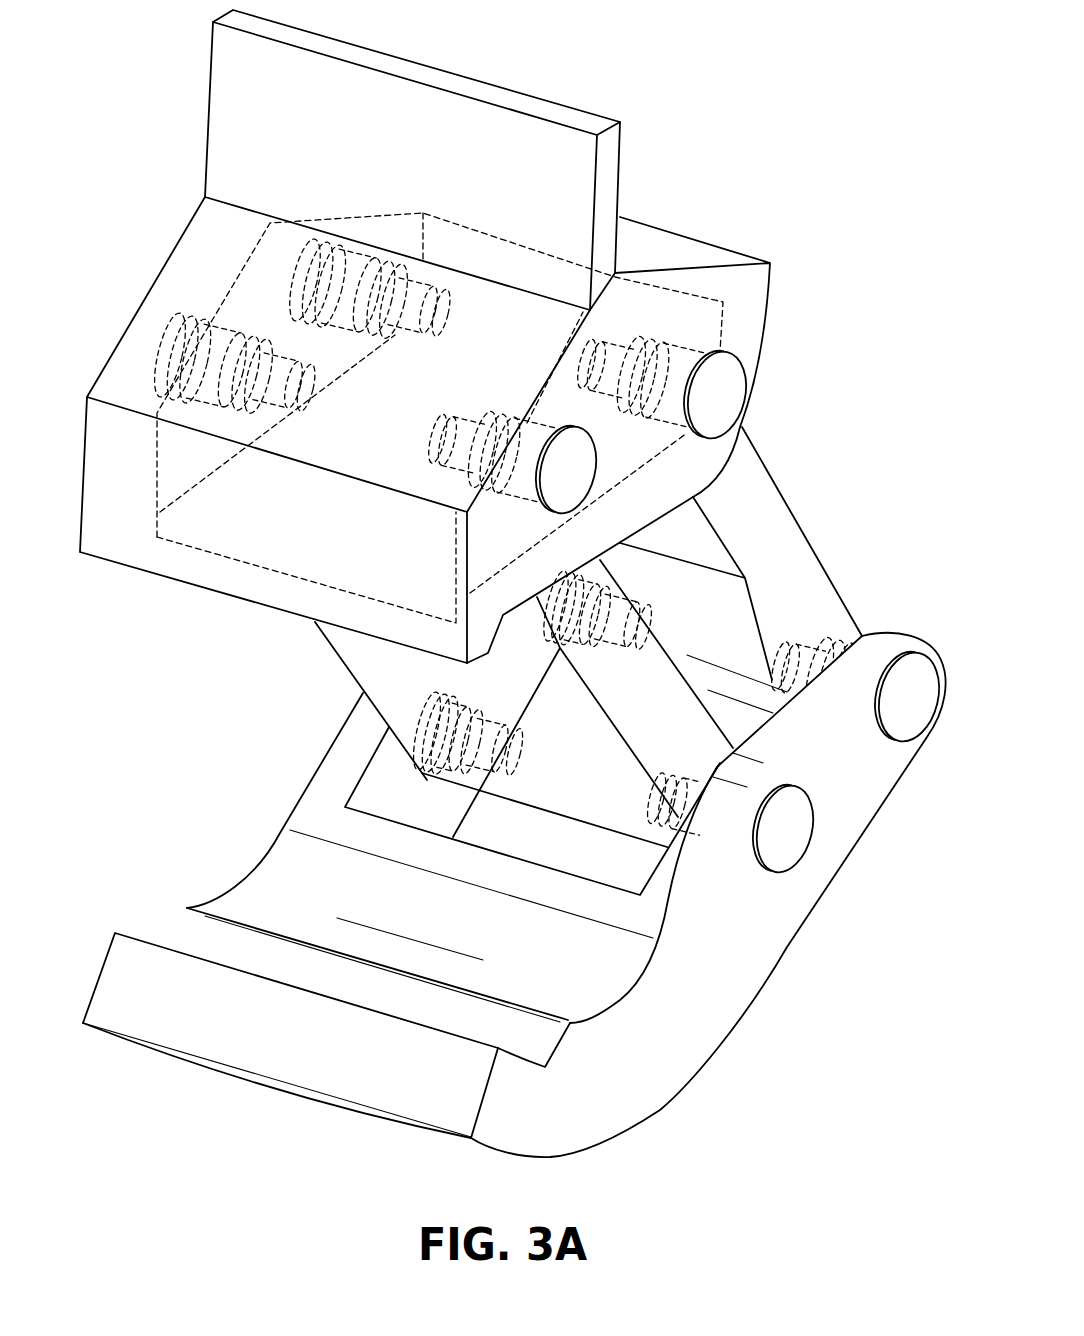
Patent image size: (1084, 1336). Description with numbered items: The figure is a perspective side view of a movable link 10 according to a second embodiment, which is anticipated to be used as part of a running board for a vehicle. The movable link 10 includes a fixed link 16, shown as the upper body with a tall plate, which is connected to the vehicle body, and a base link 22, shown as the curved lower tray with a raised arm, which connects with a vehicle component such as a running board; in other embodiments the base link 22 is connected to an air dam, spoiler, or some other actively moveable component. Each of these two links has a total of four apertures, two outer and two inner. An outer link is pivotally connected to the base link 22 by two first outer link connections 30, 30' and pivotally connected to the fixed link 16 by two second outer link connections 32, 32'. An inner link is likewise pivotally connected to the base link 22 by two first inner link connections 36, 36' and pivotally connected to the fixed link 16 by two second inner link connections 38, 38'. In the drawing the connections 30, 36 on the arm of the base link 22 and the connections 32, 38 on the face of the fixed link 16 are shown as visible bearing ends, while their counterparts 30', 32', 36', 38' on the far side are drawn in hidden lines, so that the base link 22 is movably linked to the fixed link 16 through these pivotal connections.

The movable link 10 is at (800, 130).
The fixed link 16 is at (755, 291).
The base link 22 is at (693, 1008).
The first outer link connection 30 is at (790, 835).
The first outer link connection 30' is at (375, 724).
The second outer link connection 32 is at (577, 477).
The second outer link connection 32' is at (184, 349).
The first inner link connection 36 is at (913, 687).
The first inner link connection 36' is at (712, 590).
The second inner link connection 38 is at (727, 395).
The second inner link connection 38' is at (280, 279).